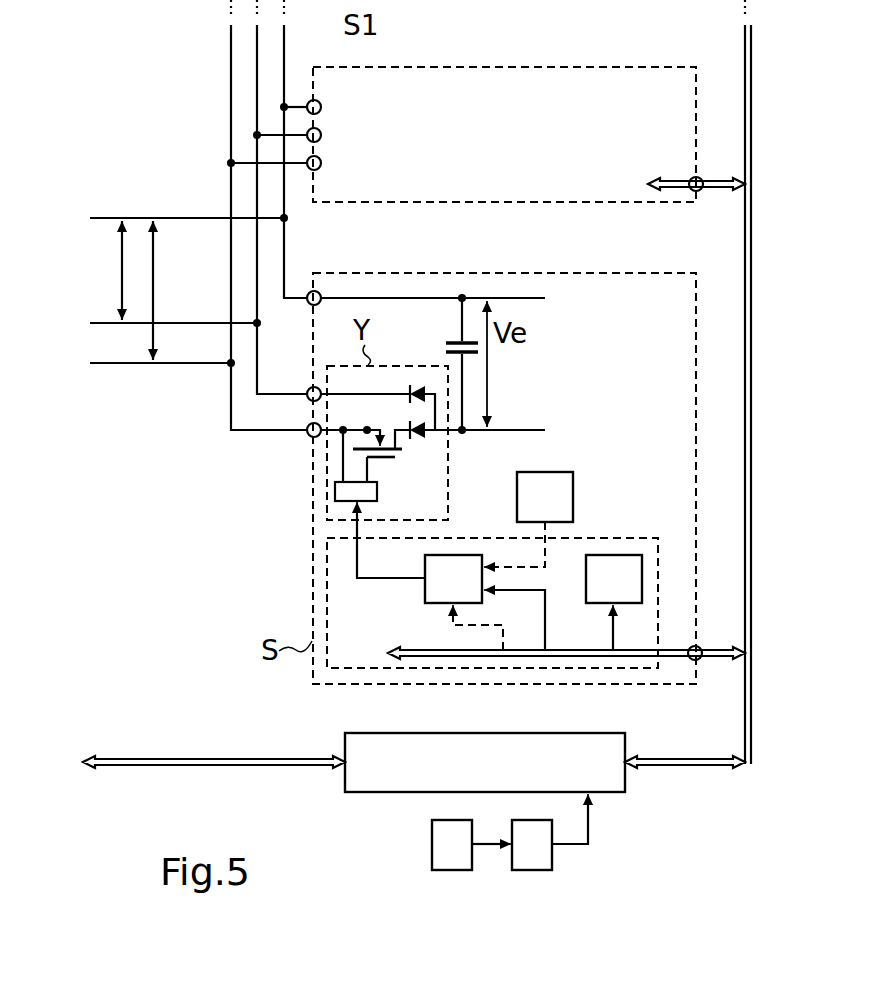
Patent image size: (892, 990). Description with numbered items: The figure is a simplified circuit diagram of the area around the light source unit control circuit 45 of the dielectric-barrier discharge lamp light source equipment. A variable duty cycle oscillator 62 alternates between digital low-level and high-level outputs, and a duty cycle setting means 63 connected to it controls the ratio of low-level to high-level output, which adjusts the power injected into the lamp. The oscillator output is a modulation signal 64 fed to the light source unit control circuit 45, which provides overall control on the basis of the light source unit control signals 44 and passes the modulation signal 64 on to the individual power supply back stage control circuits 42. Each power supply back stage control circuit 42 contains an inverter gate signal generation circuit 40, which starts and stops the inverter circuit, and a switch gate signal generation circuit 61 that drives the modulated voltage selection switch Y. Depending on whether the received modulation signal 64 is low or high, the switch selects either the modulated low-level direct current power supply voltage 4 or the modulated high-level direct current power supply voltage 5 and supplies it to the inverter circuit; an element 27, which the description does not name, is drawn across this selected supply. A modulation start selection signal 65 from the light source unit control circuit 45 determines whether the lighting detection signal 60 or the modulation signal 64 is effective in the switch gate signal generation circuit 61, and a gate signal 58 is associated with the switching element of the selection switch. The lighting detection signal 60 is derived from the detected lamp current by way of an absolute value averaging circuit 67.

The modulated low-level direct current power supply voltage 4 is at (109, 270).
The modulated high-level direct current power supply voltage 5 is at (164, 290).
The capacitor 27 is at (450, 364).
The inverter gate signal generation circuit 40 is at (630, 595).
The power supply back stage control circuit 42 is at (626, 538).
The light source unit control signals 44 is at (214, 747).
The light source unit control circuit 45 is at (504, 777).
The gate signal 58 is at (561, 512).
The lighting detection signal 60 is at (514, 547).
The switch gate signal generation circuit 61 is at (469, 595).
The variable duty cycle oscillator 62 is at (546, 860).
The duty cycle setting means 63 is at (466, 860).
The modulation signal 64 is at (590, 843).
The modulation start selection signal 65 is at (496, 623).
The absolute value averaging circuit 67 is at (535, 620).